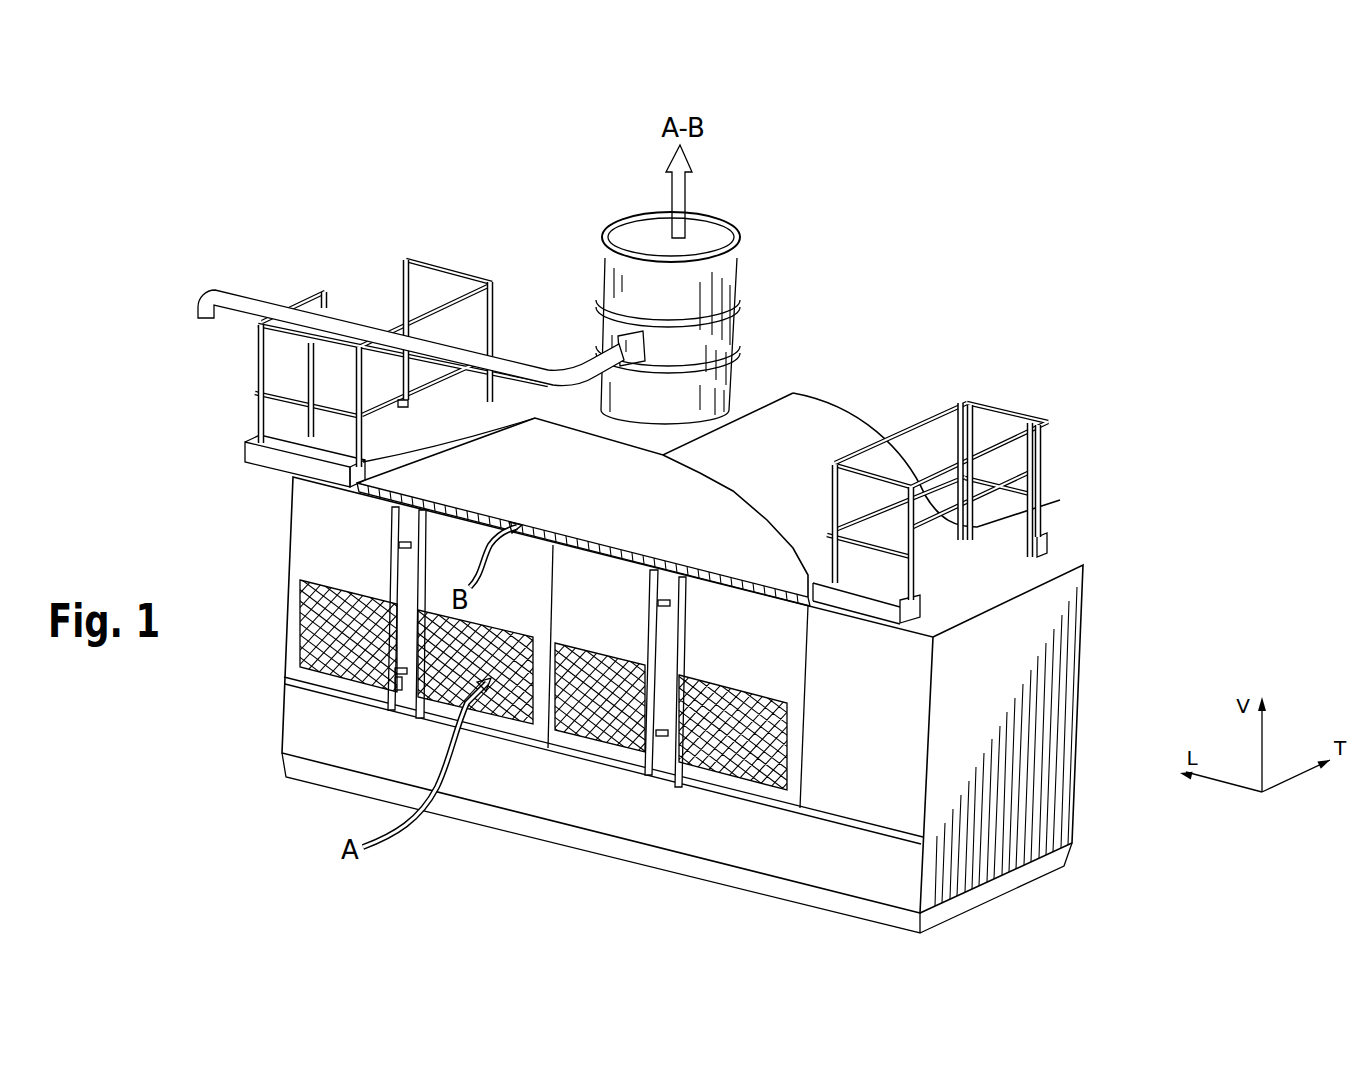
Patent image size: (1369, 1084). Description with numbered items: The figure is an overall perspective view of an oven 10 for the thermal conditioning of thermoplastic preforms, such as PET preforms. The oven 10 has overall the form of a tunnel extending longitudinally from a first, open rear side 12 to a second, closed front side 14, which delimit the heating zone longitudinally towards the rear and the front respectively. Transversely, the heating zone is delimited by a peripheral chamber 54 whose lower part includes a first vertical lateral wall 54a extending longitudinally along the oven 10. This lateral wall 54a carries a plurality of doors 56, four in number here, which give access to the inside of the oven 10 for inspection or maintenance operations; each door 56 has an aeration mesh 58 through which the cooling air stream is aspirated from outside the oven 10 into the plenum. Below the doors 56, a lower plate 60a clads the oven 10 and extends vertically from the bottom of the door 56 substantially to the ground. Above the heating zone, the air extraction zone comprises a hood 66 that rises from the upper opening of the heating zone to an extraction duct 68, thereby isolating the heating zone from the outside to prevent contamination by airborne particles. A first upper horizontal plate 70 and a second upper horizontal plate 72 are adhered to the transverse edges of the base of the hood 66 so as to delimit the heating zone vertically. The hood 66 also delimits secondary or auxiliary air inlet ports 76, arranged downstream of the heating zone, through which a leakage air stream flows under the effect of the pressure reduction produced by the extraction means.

The oven 10 is at (970, 198).
The rear side 12 is at (244, 562).
The front side 14 is at (1050, 803).
The peripheral chamber 54 is at (228, 760).
The first vertical lateral wall 54a is at (517, 793).
The door 56 is at (460, 527).
The aeration mesh 58 is at (481, 698).
The lower plate 60a is at (673, 818).
The hood 66 is at (818, 410).
The extraction duct 68 is at (760, 278).
The first upper horizontal plate 70 is at (984, 562).
The second upper horizontal plate 72 is at (342, 449).
The auxiliary air inlet ports 76 is at (722, 572).